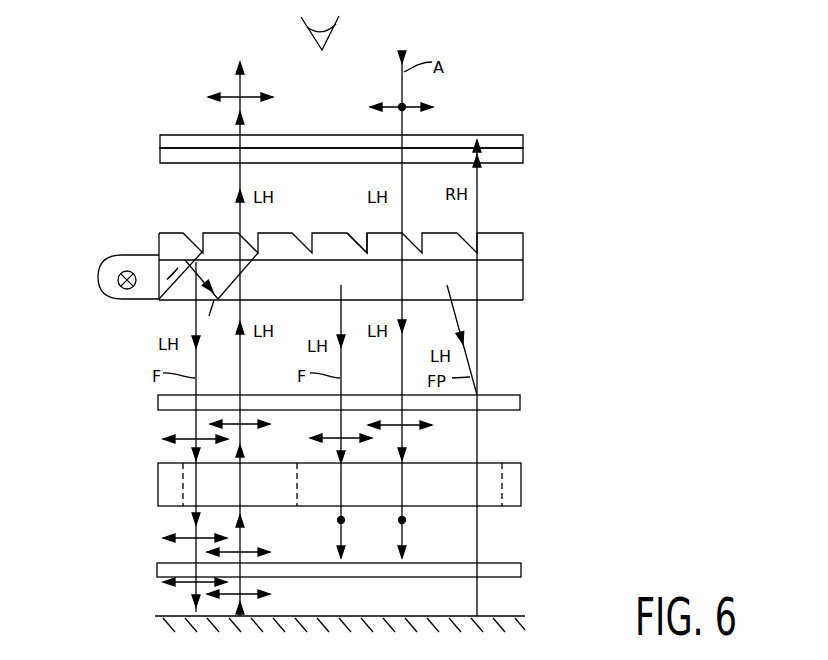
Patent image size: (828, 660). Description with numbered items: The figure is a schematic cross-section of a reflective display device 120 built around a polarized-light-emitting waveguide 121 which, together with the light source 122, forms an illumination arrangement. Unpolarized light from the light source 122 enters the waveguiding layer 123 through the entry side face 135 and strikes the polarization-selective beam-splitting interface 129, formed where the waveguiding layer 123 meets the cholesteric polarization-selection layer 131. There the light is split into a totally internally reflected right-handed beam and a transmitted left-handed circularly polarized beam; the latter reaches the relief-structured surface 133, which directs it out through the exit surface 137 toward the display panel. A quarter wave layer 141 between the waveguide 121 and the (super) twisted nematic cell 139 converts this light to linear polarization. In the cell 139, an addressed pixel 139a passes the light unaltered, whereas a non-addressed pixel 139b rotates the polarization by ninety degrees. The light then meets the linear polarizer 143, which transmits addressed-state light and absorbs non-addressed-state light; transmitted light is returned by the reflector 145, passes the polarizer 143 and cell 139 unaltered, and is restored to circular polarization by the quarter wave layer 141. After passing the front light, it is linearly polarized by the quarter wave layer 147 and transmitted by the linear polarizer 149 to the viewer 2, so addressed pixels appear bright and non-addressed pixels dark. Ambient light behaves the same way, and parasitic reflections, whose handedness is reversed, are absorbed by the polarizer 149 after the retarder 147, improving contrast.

The viewer 2 is at (338, 21).
The display device 120 is at (109, 170).
The waveguide 121 is at (373, 262).
The light source 122 is at (118, 281).
The waveguiding layer 123 is at (517, 282).
The polarization-selective beam-splitting interface 129 is at (487, 258).
The polarization-selection layer 131 is at (373, 224).
The relief-structured surface 133 is at (327, 232).
The entry side face 135 is at (159, 293).
The exit surface 137 is at (505, 301).
The (super) twisted nematic cell 139 is at (372, 507).
The pixel 139a is at (267, 506).
The pixel 139b is at (368, 498).
The quarter wave layer 141 is at (520, 402).
The linear polarizer 143 is at (512, 568).
The reflector 145 is at (512, 623).
The quarter wave layer 147 is at (517, 158).
The linear polarizer 149 is at (517, 142).